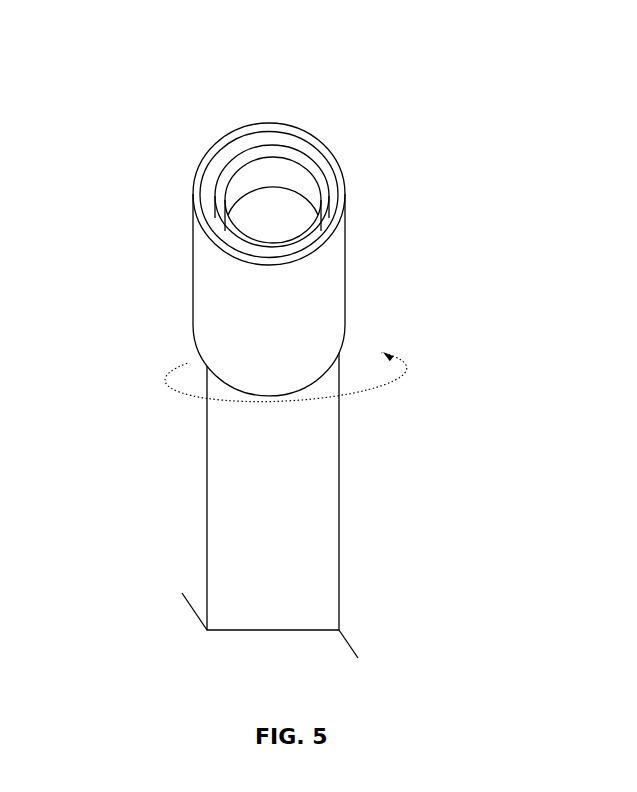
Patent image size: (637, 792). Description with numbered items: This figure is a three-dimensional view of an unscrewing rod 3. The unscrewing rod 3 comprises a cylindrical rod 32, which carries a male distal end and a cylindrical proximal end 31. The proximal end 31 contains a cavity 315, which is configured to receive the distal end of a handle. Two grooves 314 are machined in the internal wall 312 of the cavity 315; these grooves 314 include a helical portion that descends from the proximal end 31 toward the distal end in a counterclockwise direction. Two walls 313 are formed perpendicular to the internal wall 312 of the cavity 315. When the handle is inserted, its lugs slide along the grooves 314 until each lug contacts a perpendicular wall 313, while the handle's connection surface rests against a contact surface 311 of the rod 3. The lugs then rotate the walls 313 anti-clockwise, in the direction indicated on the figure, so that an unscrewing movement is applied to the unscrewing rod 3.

The unscrewing rod 3 is at (272, 329).
The cylindrical proximal end 31 is at (270, 198).
The cylindrical rod 32 is at (234, 505).
The contact surface 311 is at (350, 155).
The internal wall 312 is at (342, 123).
The perpendicular wall 313 is at (267, 194).
The groove 314 is at (294, 216).
The cavity 315 is at (190, 120).